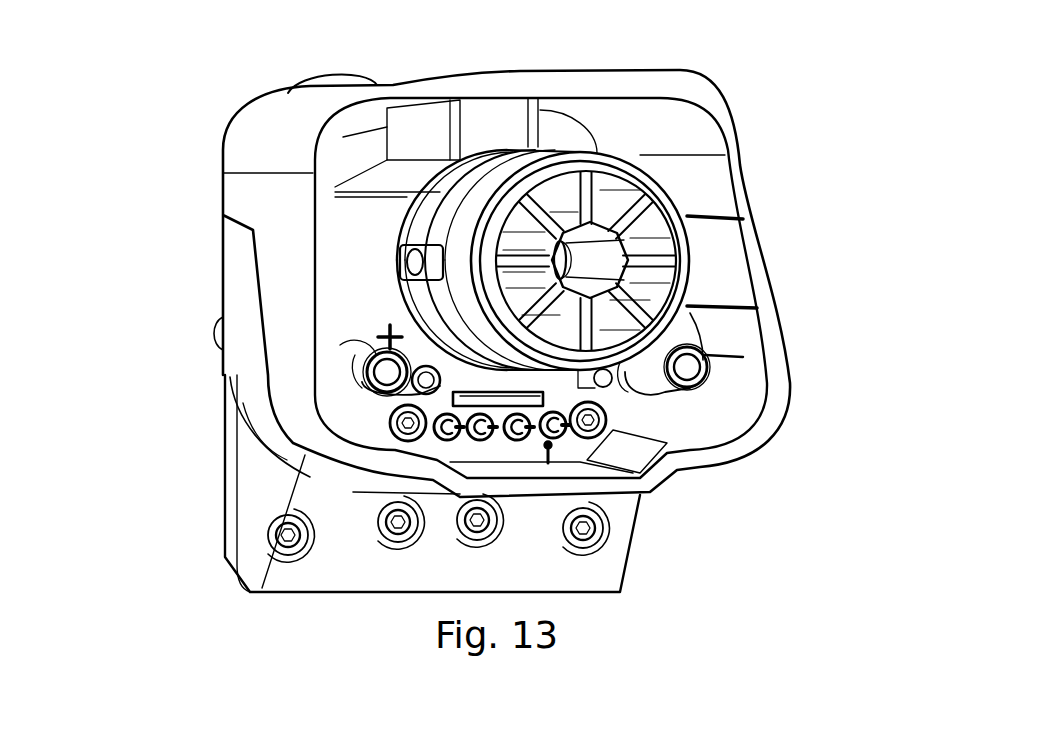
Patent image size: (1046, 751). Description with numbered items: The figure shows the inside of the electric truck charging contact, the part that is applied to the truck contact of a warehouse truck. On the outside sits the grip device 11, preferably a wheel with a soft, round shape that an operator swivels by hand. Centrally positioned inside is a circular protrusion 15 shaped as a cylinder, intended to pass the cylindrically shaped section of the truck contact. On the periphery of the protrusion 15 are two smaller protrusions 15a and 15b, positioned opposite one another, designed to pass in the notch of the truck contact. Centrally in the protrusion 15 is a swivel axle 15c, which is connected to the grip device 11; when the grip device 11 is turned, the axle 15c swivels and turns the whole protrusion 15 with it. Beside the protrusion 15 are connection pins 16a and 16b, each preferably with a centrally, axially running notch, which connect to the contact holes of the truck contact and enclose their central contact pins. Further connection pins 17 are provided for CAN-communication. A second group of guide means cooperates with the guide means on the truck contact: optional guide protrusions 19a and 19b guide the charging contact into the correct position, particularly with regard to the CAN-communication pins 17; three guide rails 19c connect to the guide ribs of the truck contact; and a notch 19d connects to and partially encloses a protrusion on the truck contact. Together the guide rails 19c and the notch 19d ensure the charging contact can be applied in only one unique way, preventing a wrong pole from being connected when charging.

The grip device 11 is at (215, 317).
The circular protrusion 15 is at (633, 175).
The smaller protrusion 15a is at (405, 258).
The smaller protrusion 15b is at (690, 215).
The swivel axle 15c is at (562, 262).
The connection pin 16a is at (363, 374).
The connection pin 16b is at (707, 366).
The connection pins for CAN-communication 17 is at (391, 435).
The guide protrusion 19a is at (380, 395).
The guide protrusion 19b is at (653, 395).
The guide rails 19c is at (687, 257).
The notch 19d is at (560, 473).